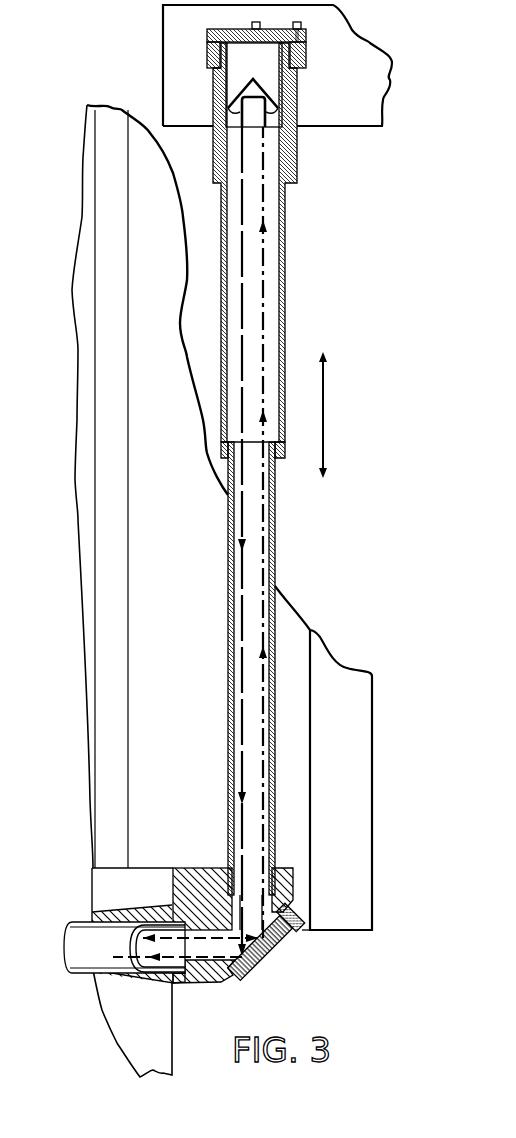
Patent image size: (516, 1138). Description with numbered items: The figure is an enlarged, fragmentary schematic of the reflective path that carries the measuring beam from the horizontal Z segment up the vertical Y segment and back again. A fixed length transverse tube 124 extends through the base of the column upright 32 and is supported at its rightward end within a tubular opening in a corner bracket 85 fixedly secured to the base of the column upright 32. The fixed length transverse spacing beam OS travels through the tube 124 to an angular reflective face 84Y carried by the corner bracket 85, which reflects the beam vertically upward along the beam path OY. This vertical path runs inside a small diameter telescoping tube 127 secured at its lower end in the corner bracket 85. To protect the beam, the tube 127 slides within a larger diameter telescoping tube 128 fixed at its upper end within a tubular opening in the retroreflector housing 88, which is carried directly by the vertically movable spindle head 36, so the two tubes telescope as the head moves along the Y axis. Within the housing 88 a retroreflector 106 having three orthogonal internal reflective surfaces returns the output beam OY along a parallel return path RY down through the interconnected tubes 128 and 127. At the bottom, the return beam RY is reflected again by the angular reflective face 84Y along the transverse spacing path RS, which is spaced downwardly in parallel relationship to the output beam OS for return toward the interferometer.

The spindle head 36 is at (177, 96).
The column upright 32 is at (133, 1038).
The retroreflector housing 88 is at (205, 38).
The retroreflector 106 is at (297, 110).
The larger diameter telescoping tube 128 is at (286, 330).
The small diameter telescoping tube 127 is at (275, 572).
The corner bracket 85 is at (190, 976).
The angular reflective face 84Y is at (280, 946).
The transverse tube 124 is at (85, 973).
The return beam path RY is at (242, 270).
The vertical output beam path OY is at (265, 292).
The transverse spacing beam OS is at (148, 924).
The transverse return spacing path RS is at (153, 978).
The Y axis Y is at (323, 415).